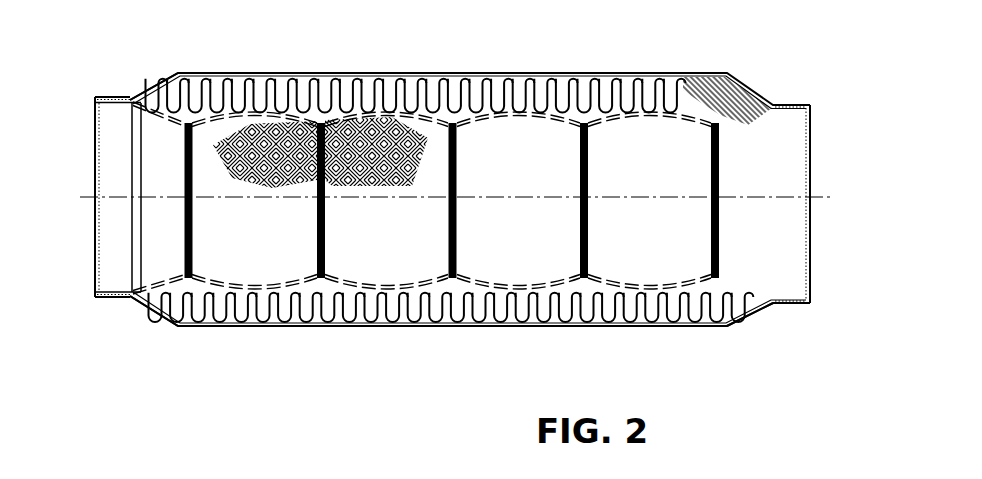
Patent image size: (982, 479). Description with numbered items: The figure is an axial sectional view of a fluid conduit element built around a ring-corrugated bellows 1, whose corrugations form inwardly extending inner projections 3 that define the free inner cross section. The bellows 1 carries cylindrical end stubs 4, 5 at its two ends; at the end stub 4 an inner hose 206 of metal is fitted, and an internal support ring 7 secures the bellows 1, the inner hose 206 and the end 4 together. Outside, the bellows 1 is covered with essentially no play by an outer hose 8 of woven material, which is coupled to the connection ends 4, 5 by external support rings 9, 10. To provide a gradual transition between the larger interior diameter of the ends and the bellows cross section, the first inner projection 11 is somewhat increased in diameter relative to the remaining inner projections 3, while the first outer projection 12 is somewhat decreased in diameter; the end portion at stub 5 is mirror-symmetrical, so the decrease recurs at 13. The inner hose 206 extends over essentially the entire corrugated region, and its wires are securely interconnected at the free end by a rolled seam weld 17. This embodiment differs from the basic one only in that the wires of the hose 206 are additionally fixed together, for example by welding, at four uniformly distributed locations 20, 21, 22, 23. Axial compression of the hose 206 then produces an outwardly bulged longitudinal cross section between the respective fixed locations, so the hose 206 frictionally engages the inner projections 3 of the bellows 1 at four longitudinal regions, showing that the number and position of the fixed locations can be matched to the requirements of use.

The ring-corrugated bellows 1 is at (428, 95).
The inner projections 3 is at (293, 80).
The cylindrical end stub 4 is at (95, 102).
The cylindrical end stub 5 is at (782, 299).
The internal support ring 7 is at (110, 253).
The outer hose 8 is at (722, 94).
The external support ring 9 is at (107, 97).
The external support ring 10 is at (789, 103).
The first inner projection 11 is at (140, 100).
The first outer projection 12 is at (158, 306).
The decreased-diameter outer projection 13 is at (740, 323).
The rolled seam weld 17 is at (719, 247).
The fixed location 20 is at (192, 249).
The fixed location 21 is at (325, 249).
The fixed location 22 is at (457, 248).
The fixed location 23 is at (588, 232).
The chamber 206 is at (515, 148).